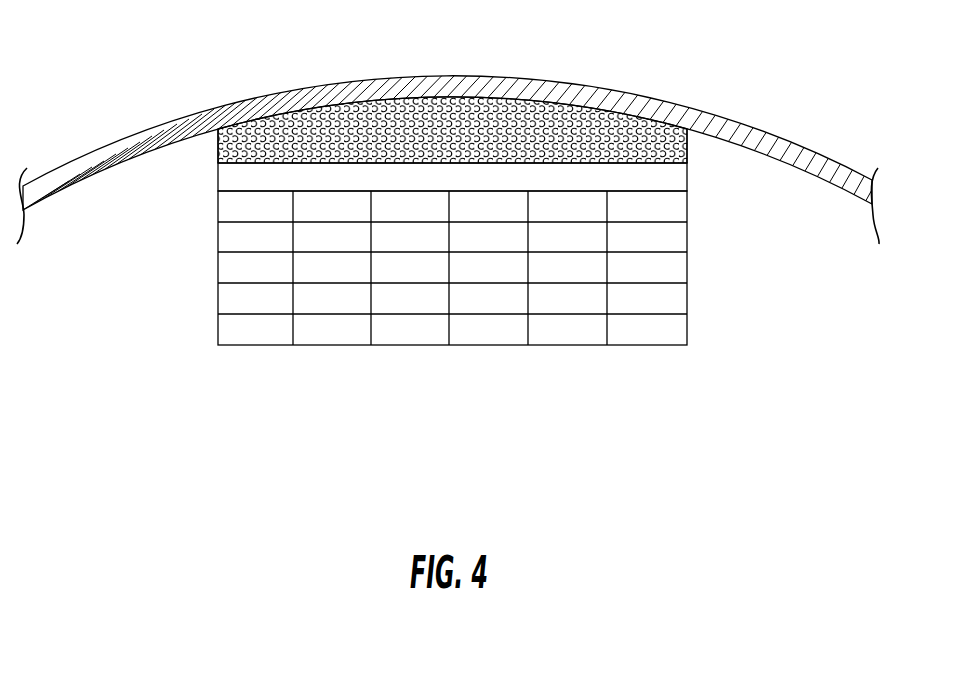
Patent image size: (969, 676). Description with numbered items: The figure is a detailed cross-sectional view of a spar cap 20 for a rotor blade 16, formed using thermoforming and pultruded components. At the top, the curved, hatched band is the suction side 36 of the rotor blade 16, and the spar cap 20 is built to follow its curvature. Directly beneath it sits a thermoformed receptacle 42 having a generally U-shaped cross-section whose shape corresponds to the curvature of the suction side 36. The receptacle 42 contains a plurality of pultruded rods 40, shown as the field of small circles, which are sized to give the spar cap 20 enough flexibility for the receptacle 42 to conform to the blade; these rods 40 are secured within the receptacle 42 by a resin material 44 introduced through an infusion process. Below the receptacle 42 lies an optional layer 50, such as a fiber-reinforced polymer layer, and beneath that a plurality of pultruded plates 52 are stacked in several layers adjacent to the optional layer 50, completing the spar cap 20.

The rotor blade 16 is at (115, 58).
The suction side 36 is at (757, 123).
The resin material 44 is at (330, 110).
The pultruded rods 40 is at (218, 137).
The receptacle 42 is at (688, 143).
The optional layer 50 is at (232, 177).
The spar cap 20 is at (176, 302).
The pultruded plates 52 is at (317, 332).